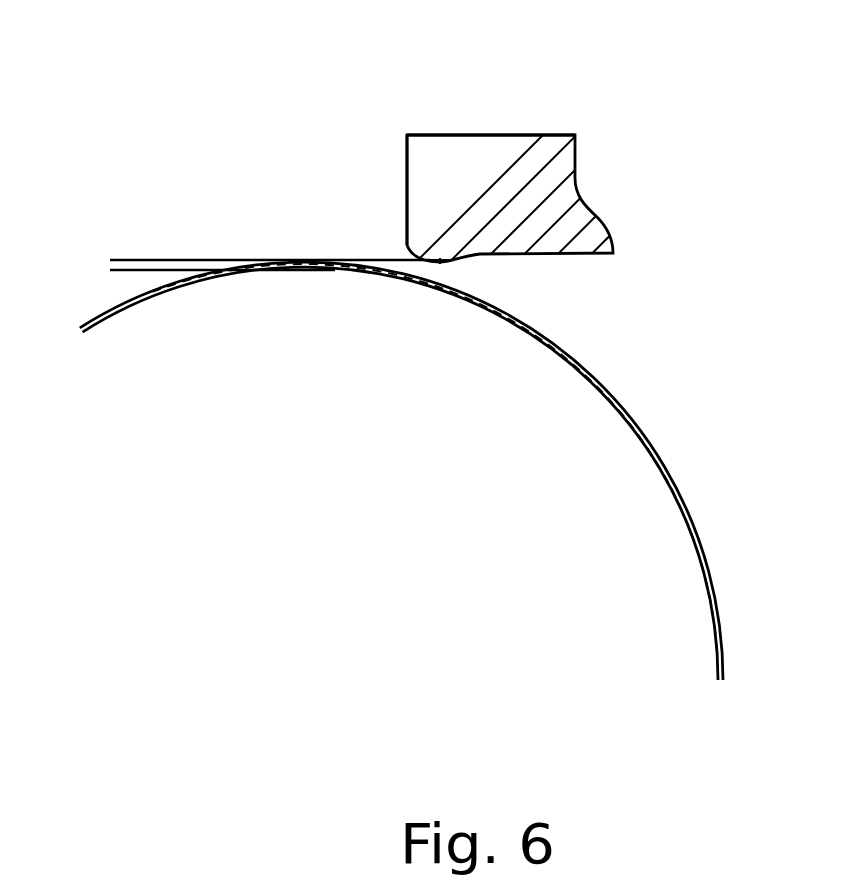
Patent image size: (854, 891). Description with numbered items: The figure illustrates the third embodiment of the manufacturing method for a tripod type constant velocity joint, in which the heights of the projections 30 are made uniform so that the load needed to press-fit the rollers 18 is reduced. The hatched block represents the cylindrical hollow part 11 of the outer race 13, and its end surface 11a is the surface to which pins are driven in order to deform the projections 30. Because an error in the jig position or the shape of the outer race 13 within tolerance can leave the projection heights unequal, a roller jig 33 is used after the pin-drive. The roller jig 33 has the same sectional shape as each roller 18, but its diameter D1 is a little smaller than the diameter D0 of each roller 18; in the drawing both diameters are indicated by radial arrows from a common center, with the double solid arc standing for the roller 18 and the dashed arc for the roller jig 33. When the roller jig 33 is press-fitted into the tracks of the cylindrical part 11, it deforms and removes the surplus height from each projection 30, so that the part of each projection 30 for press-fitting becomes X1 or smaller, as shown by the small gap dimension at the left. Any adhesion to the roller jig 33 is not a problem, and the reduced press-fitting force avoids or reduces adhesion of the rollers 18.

The cylindrical hollow part 11 is at (443, 157).
The end surface of the cylindrical hollow part 11a is at (407, 185).
The outer race 13 is at (503, 135).
The projection 30 is at (445, 262).
The roller 18 is at (582, 367).
The roller jig 33 is at (640, 470).
The press-fitting part height X1 is at (113, 225).
The diameter of the roller D0 is at (300, 680).
The diameter of the roller jig D1 is at (637, 448).